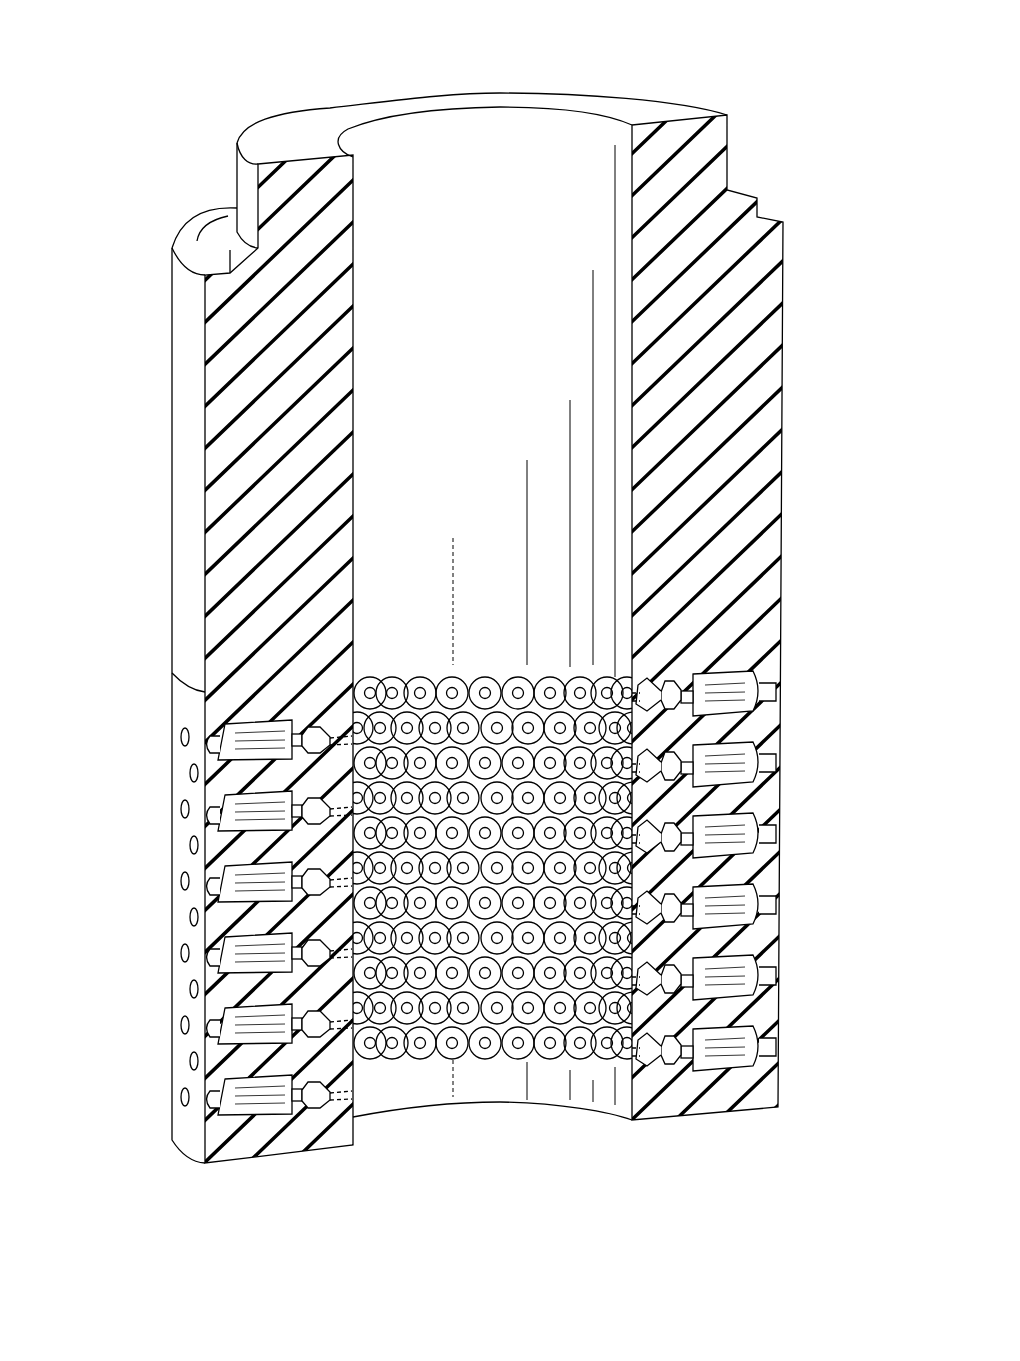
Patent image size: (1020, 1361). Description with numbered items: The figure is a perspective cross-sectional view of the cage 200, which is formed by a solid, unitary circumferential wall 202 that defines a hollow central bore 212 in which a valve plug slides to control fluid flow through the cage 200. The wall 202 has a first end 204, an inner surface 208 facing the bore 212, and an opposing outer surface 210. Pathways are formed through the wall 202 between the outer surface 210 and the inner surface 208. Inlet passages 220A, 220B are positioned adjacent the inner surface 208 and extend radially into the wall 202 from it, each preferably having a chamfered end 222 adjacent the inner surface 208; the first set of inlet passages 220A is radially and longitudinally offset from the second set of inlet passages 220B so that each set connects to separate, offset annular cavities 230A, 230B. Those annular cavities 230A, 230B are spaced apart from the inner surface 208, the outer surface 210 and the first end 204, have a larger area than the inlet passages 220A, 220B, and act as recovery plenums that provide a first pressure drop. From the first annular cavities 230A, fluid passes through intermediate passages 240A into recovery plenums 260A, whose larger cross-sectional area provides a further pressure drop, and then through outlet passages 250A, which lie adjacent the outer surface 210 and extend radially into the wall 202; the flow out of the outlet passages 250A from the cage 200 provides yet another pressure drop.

The cage 200 is at (280, 35).
The circumferential wall 202 is at (222, 340).
The first end 204 is at (621, 96).
The inner surface 208 is at (360, 252).
The outer surface 210 is at (160, 440).
The hollow central bore 212 is at (512, 348).
The first set of inlet passages 220A is at (650, 688).
The second set of inlet passages 220B is at (345, 742).
The end 222 is at (630, 690).
The first set of annular cavities 230A is at (673, 688).
The second set of annular cavities 230B is at (322, 742).
The first set of intermediate passages 240A is at (690, 688).
The first set of outlet passages 250A is at (777, 674).
The first set of recovery plenums 260A is at (742, 672).